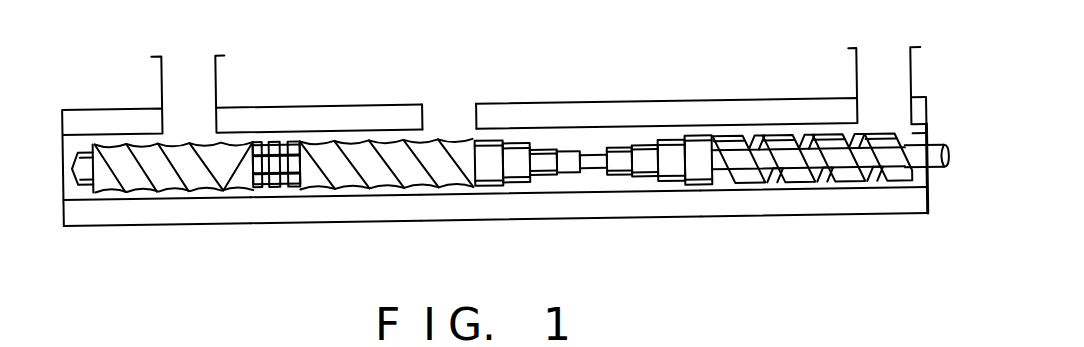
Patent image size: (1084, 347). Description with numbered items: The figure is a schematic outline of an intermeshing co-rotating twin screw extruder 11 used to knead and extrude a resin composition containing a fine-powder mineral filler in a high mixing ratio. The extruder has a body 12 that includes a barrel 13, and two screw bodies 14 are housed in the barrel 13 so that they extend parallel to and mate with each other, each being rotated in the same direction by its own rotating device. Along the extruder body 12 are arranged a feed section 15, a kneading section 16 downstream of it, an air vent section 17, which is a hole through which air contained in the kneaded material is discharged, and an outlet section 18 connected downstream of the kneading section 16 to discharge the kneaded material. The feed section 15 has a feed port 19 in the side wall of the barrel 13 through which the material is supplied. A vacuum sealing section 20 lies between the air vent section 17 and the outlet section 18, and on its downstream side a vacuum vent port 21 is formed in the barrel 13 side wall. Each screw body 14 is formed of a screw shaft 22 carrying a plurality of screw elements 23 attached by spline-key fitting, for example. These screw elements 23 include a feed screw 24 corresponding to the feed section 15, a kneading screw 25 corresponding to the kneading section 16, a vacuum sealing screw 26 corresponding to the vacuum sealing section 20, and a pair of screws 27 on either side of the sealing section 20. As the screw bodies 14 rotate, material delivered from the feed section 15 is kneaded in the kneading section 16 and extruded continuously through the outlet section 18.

The twin screw extruder 11 is at (658, 100).
The body 12 is at (335, 104).
The barrel 13 is at (198, 215).
The screw body 14 is at (541, 146).
The feed section 15 is at (865, 236).
The kneading section 16 is at (532, 238).
The air vent section 17 is at (447, 119).
The outlet section 18 is at (55, 128).
The feed port 19 is at (885, 72).
The vacuum sealing section 20 is at (293, 234).
The vacuum vent port 21 is at (188, 70).
The screw shaft 22 is at (805, 159).
The screw elements 23 is at (517, 188).
The feed screw 24 is at (844, 195).
The kneading screw 25 is at (596, 178).
The vacuum sealing screw 26 is at (273, 146).
The pair of screws 27 is at (122, 171).